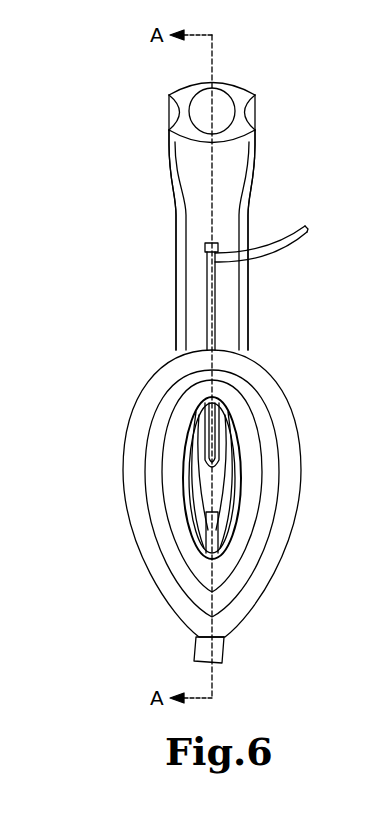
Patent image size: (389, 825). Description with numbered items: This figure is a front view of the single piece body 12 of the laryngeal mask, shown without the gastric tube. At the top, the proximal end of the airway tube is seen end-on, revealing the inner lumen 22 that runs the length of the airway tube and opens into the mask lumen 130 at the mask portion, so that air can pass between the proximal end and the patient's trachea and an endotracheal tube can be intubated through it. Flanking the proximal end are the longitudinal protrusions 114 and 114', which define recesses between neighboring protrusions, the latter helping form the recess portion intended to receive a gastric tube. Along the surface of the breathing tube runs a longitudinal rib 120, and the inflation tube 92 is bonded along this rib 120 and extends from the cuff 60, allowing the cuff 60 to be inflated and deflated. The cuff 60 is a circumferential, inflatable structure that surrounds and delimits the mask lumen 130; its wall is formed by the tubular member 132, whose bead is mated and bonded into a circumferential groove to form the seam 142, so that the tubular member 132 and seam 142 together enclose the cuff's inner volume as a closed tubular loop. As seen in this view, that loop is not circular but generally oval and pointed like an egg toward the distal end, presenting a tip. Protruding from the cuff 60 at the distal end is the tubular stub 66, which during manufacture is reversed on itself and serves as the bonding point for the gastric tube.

The single piece body 12 is at (108, 356).
The inner lumen 22 is at (190, 107).
The longitudinal protrusion 114 is at (288, 240).
The longitudinal protrusion 114' is at (134, 240).
The longitudinal rib 120 is at (205, 250).
The inflation tube 92 is at (280, 251).
The inflatable cuff 60 is at (136, 552).
The tubular member 132 is at (250, 590).
The mask lumen 130 is at (188, 448).
The seam 142 is at (238, 528).
The tubular stub 66 is at (194, 650).